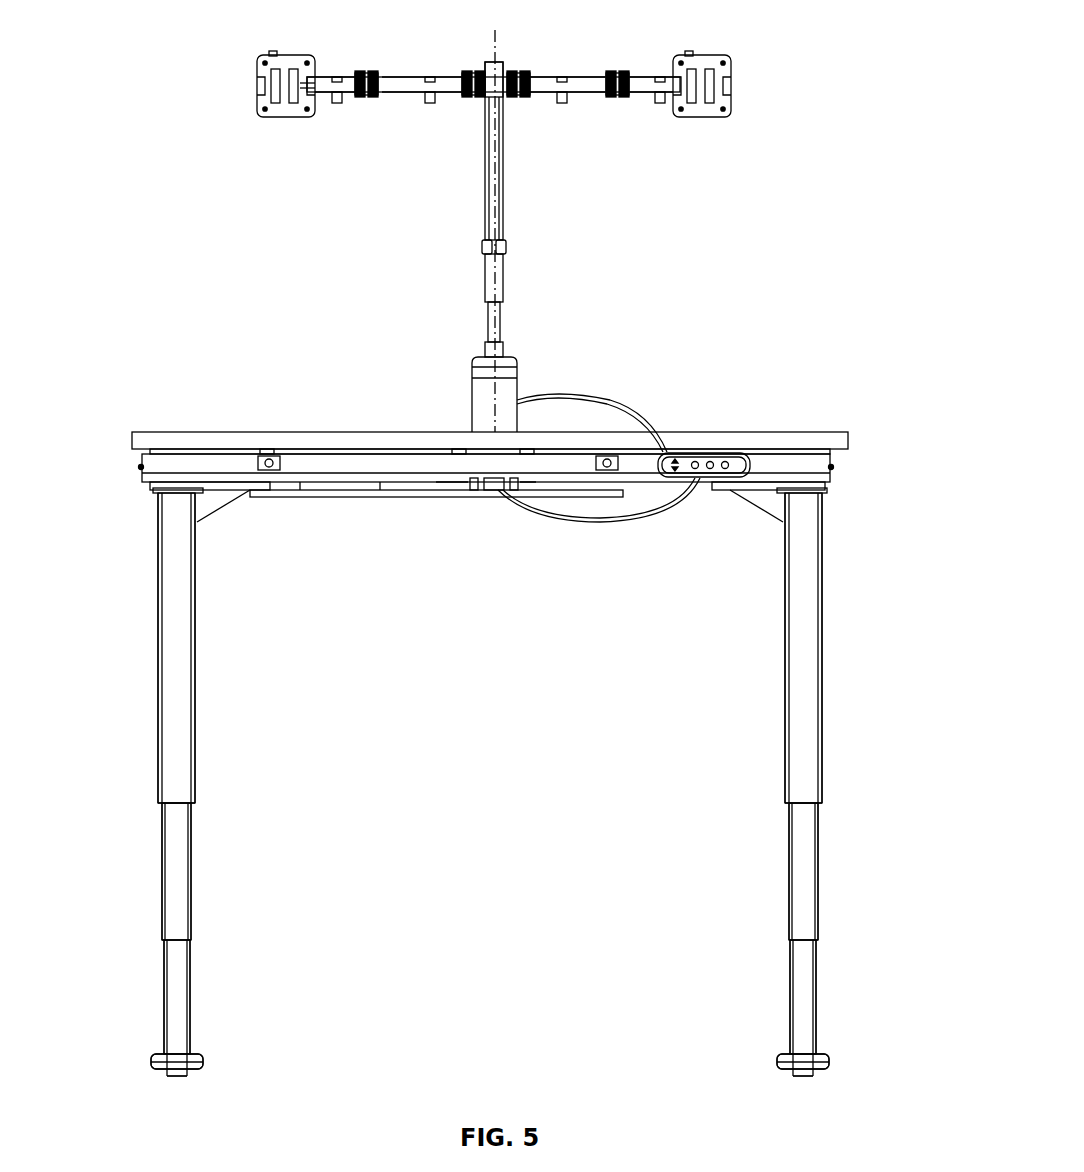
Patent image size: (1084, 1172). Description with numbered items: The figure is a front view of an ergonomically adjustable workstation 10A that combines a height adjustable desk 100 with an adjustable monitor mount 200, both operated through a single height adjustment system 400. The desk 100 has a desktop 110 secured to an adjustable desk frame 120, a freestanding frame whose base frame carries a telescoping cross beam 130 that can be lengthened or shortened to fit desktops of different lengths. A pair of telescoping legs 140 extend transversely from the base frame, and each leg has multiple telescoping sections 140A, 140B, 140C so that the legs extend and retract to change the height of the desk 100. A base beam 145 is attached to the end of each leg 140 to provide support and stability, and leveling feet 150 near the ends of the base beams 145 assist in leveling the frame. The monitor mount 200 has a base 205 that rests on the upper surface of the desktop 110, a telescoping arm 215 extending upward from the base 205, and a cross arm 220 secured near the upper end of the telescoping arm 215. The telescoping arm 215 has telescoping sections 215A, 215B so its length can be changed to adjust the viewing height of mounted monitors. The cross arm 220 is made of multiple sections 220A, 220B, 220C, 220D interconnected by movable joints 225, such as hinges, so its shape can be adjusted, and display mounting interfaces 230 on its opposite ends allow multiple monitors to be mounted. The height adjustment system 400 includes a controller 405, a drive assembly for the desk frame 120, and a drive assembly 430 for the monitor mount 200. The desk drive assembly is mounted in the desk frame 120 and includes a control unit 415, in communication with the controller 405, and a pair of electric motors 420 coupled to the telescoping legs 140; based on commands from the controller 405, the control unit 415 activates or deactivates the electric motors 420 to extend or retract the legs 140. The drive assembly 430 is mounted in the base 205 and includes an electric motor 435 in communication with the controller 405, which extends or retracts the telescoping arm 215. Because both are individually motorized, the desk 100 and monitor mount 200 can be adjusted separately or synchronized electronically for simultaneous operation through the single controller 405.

The ergonomically adjustable workstation 10A is at (200, 214).
The desk 100 is at (170, 416).
The desktop 110 is at (328, 438).
The adjustable desk frame 120 is at (272, 505).
The cross beam 130 is at (328, 474).
The telescoping legs 140 is at (150, 738).
The telescoping section 140A is at (182, 693).
The telescoping section 140B is at (182, 868).
The telescoping section 140C is at (182, 997).
The base beam 145 is at (200, 1063).
The leveling feet 150 is at (175, 1082).
The monitor mount 200 is at (467, 300).
The base 205 is at (472, 393).
The telescoping arm 215 is at (484, 190).
The telescoping section 215A is at (505, 212).
The telescoping section 215B is at (505, 322).
The cross arm 220 is at (534, 102).
The section 220A is at (318, 88).
The section 220B is at (405, 88).
The section 220C is at (585, 87).
The section 220D is at (645, 90).
The movable joints 225 is at (375, 73).
The display mounting interfaces 230 is at (262, 82).
The height adjustment system 400 is at (686, 496).
The controller 405 is at (738, 458).
The control unit 415 is at (486, 490).
The electric motors 420 is at (200, 490).
The drive assembly 430 is at (498, 500).
The electric motor 435 is at (491, 419).